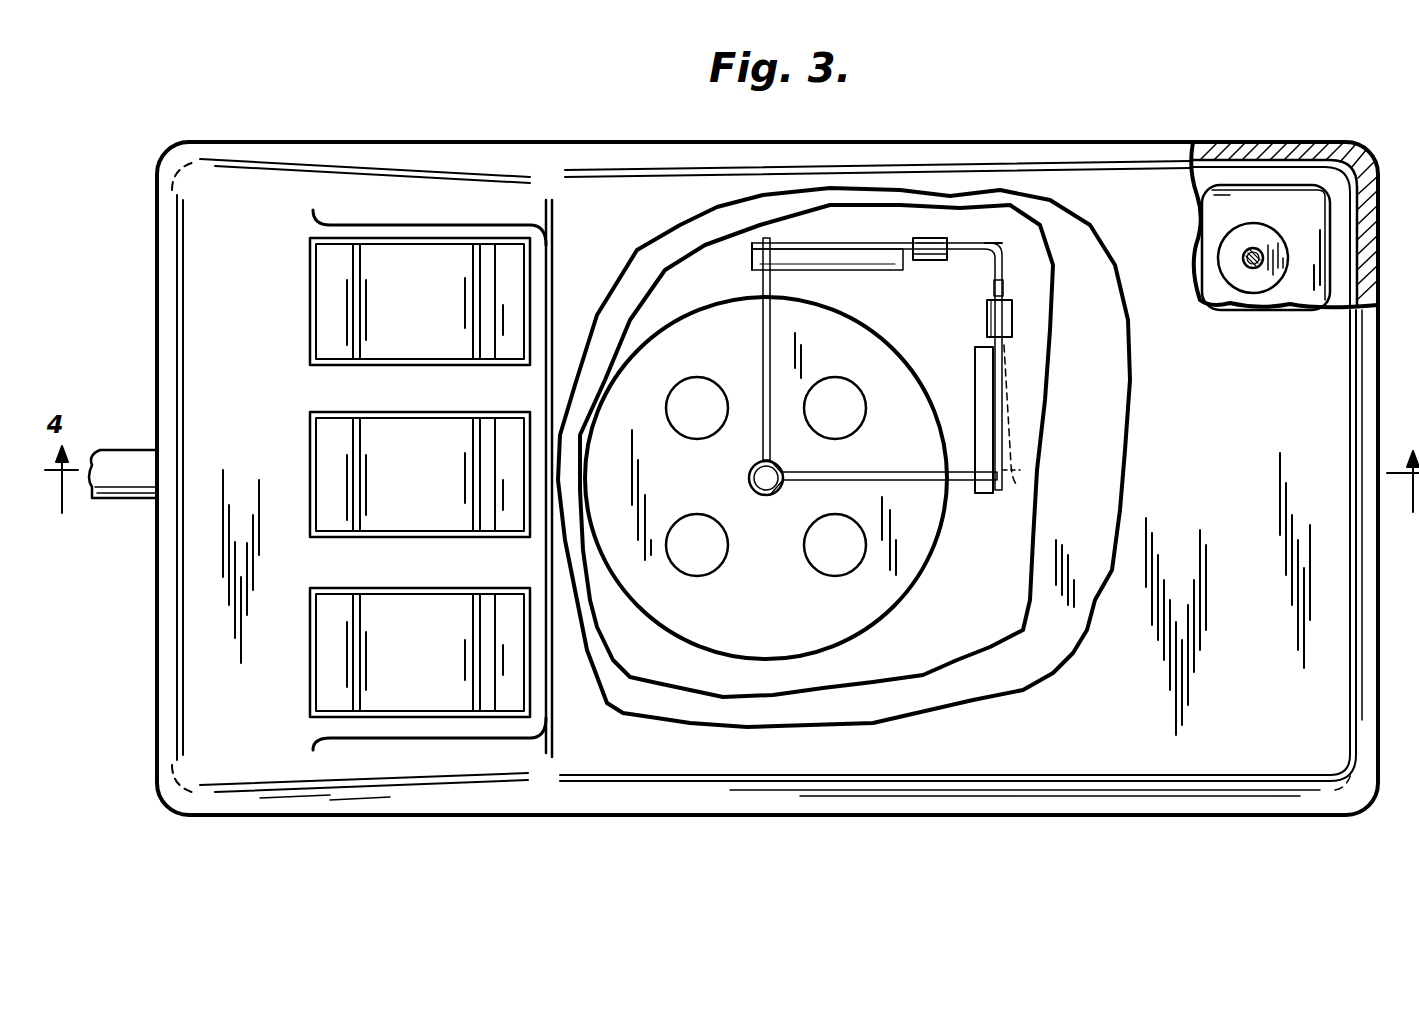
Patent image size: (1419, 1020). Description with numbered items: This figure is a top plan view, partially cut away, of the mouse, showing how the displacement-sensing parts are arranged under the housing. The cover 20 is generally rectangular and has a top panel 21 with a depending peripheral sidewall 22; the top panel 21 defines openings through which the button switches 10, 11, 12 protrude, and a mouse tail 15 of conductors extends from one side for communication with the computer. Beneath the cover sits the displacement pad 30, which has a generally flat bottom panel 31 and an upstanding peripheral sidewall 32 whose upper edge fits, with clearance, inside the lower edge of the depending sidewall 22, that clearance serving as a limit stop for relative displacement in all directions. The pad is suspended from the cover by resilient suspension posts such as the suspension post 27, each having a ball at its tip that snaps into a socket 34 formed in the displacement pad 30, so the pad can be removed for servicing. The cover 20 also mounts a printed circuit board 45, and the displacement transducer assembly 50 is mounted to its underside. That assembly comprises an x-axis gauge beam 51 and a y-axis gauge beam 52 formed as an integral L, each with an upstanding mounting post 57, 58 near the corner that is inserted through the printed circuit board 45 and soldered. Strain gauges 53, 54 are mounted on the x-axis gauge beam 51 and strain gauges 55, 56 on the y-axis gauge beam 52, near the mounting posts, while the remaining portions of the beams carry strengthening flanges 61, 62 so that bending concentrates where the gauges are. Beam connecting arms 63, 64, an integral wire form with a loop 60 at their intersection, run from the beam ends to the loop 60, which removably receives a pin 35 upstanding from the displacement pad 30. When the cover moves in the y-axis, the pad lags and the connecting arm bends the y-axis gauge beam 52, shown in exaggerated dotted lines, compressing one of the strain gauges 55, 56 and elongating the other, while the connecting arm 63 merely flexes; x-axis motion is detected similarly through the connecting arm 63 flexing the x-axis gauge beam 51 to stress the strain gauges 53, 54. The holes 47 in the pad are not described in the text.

The cover 20 is at (388, 110).
The top panel 21 is at (1210, 499).
The depending peripheral sidewall 22 is at (1355, 148).
The mouse tail 15 is at (117, 450).
The button switch 10 is at (403, 295).
The button switch 11 is at (403, 467).
The button switch 12 is at (403, 645).
The suspension post 27 is at (1258, 268).
The displacement pad 30 is at (1245, 165).
The bottom panel 31 is at (950, 612).
The upstanding peripheral sidewall 32 is at (1280, 165).
The socket 34 is at (1240, 245).
The pin 35 is at (770, 485).
The printed circuit board 45 is at (1075, 390).
The holes 47 is at (703, 390).
The displacement transducer assembly 50 is at (851, 230).
The x-axis gauge beam 51 is at (800, 240).
The y-axis gauge beam 52 is at (998, 437).
The strain gauge 53 is at (931, 260).
The strain gauge 54 is at (935, 236).
The strain gauge 55 is at (1012, 320).
The strain gauge 56 is at (988, 313).
The mounting post 57 is at (975, 243).
The mounting post 58 is at (1003, 290).
The loop 60 is at (748, 478).
The strengthening flange 61 is at (853, 267).
The strengthening flange 62 is at (985, 405).
The beam connecting arm 63 is at (762, 283).
The beam connecting arm 64 is at (963, 482).